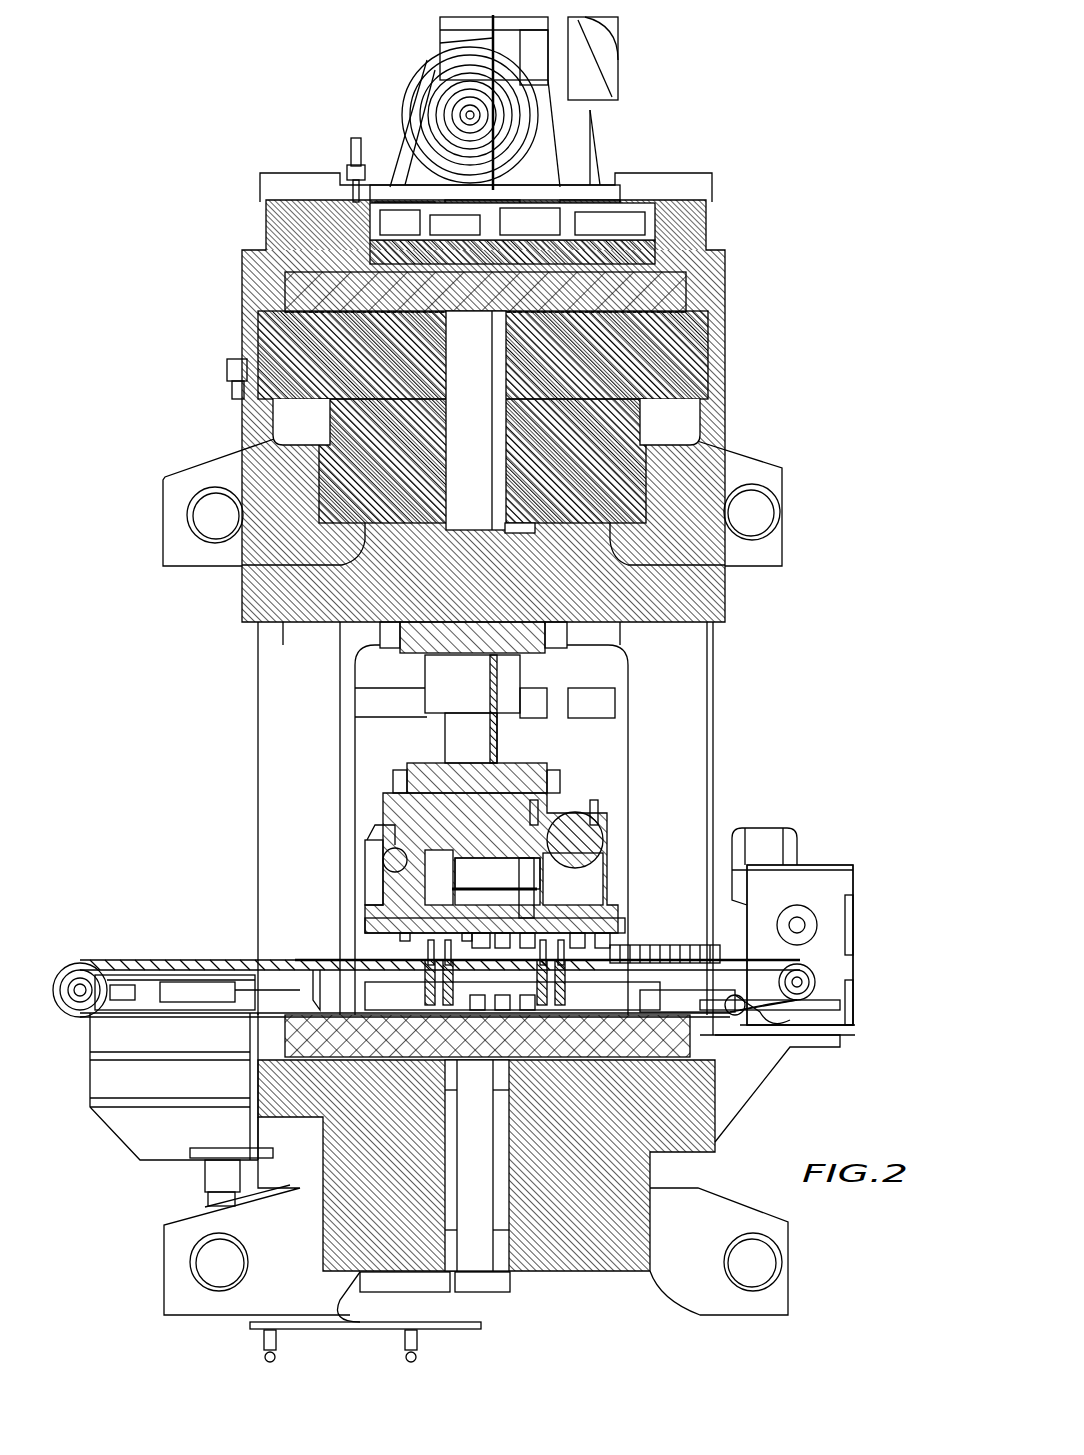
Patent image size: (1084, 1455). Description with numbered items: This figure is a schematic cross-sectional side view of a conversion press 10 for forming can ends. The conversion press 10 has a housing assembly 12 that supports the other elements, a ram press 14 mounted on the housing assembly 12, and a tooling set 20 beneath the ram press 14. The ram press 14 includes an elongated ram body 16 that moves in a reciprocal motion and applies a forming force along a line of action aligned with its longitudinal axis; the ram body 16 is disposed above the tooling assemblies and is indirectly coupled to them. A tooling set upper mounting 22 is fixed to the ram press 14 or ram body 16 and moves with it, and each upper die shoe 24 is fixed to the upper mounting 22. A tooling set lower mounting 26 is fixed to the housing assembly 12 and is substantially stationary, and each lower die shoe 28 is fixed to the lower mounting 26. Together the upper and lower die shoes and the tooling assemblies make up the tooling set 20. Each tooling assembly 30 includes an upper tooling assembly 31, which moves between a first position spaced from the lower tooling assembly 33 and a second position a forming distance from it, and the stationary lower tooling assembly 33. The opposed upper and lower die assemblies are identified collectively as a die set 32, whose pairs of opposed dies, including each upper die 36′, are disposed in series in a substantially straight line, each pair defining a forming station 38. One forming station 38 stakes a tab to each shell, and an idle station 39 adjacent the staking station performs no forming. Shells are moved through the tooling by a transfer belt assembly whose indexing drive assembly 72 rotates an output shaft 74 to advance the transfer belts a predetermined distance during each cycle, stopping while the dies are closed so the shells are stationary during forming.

The conversion press 10 is at (812, 187).
The housing assembly 12 is at (690, 678).
The ram press 14 is at (780, 313).
The ram body 16 is at (452, 682).
The tooling set 20 is at (757, 768).
The tooling set upper mounting 22 is at (410, 772).
The upper die shoe 24 is at (365, 910).
The tooling set lower mounting 26 is at (650, 1000).
The lower die shoe 28 is at (622, 983).
The tooling assembly 30 is at (122, 948).
The upper tooling assembly 31 is at (882, 855).
The die set 32 is at (874, 897).
The lower tooling assembly 33 is at (876, 997).
The upper die 36′ is at (590, 960).
The forming station 38 is at (496, 887).
The idle station 39 is at (525, 916).
The indexing drive assembly 72 is at (845, 970).
The output shaft 74 is at (797, 925).